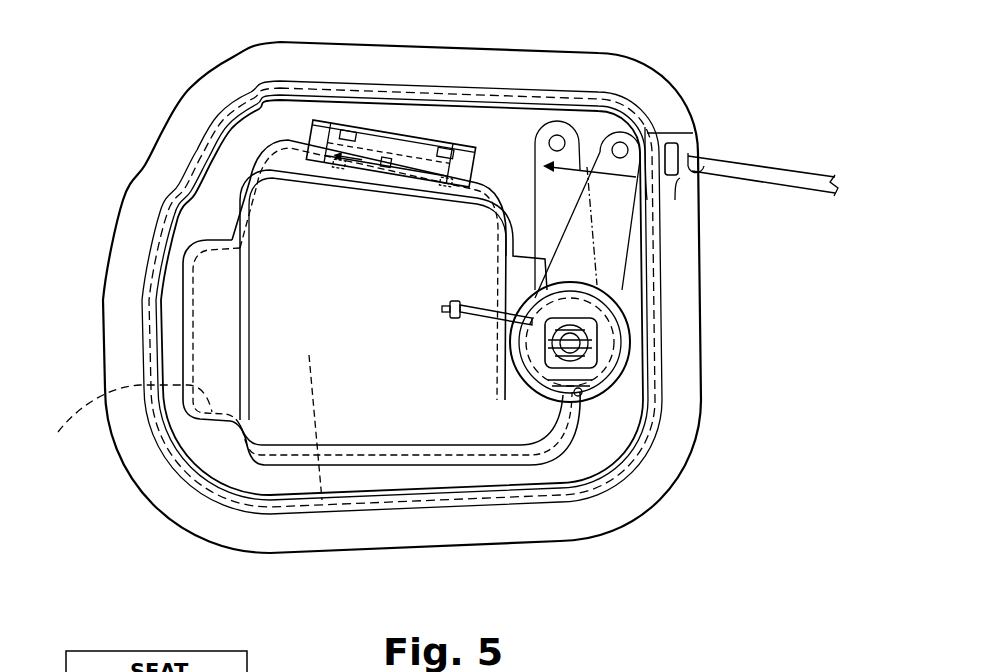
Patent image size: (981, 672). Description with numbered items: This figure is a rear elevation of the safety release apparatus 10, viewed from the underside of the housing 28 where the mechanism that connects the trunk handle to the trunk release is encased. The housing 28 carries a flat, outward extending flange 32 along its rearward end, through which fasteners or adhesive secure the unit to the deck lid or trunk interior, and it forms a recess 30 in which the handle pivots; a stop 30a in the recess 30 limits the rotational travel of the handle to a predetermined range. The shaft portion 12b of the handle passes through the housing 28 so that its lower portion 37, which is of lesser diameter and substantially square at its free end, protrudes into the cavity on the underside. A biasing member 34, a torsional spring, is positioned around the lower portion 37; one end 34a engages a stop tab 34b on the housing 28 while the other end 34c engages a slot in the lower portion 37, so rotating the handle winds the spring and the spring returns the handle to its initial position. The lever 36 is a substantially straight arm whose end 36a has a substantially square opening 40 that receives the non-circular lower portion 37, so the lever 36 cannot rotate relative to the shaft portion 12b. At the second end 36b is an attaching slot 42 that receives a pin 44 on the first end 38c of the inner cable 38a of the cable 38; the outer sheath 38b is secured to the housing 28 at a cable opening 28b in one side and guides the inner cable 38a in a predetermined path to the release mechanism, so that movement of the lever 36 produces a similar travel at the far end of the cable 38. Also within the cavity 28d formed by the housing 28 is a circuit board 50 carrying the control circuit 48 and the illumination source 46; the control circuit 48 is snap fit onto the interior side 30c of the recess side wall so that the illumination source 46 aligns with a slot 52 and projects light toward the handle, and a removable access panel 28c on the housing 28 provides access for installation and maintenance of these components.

The safety release apparatus 10 is at (125, 36).
The housing 28 is at (106, 239).
The cable opening 28b is at (715, 160).
The removable access panel 28c is at (416, 101).
The cavity 28d is at (485, 125).
The recess 30 is at (323, 503).
The stop 30a is at (90, 410).
The interior side of side wall 30c is at (513, 90).
The flange 32 is at (677, 447).
The biasing member 34 is at (493, 333).
The end of biasing member 34a is at (452, 300).
The stop tab 34b is at (452, 320).
The end of biasing member 34c is at (585, 420).
The lever 36 is at (613, 253).
The end of lever 36a is at (578, 397).
The second end of lever 36b is at (620, 141).
The lower portion of shaft 37 is at (588, 325).
The cable 38 is at (800, 185).
The inner cable 38a is at (665, 130).
The outer sheath 38b is at (818, 170).
The first end of inner cable 38c is at (660, 122).
The opening 40 is at (560, 398).
The attaching slot 42 is at (643, 125).
The pin 44 is at (640, 128).
The illumination source 46 is at (346, 128).
The control circuit 48 is at (353, 131).
The circuit board 50 is at (395, 140).
The slot 52 is at (340, 170).
The shaft portion 12b is at (520, 391).